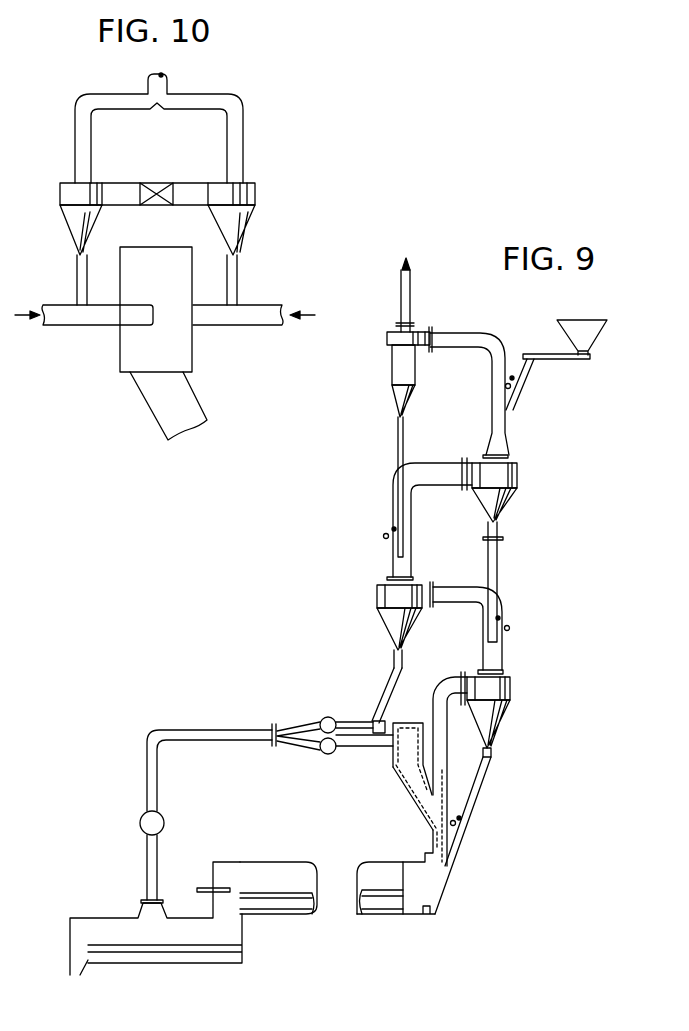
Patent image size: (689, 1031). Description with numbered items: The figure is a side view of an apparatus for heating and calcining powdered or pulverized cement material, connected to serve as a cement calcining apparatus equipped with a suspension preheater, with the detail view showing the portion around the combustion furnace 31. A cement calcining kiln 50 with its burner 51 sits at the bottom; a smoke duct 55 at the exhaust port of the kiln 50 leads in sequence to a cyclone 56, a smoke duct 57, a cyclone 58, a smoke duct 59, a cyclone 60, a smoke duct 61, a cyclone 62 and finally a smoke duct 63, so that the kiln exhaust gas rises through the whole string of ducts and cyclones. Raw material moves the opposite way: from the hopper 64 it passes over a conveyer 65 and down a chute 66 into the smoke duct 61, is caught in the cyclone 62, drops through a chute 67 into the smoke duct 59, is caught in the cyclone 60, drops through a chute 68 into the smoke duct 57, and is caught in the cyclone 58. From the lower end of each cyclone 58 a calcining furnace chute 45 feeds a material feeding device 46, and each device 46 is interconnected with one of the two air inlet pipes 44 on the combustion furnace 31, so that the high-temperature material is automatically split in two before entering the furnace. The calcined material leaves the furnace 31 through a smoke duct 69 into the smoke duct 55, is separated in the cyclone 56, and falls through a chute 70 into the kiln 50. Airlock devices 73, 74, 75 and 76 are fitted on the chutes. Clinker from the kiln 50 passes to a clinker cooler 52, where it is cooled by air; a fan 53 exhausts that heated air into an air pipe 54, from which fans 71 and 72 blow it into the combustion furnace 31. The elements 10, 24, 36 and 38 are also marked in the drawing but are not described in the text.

In FIG. 9, the conveying conduit 10 is at (458, 584).
In FIG. 9, the discharge conduit 24 is at (483, 783).
In FIG. 10, the combustion furnace 31 is at (120, 362).
In FIG. 9, the combustion furnace 31 is at (393, 758).
In FIG. 9, the inclined wall 36 is at (412, 760).
In FIG. 9, the gas supply pipe 38 is at (350, 722).
In FIG. 10, the air inlet pipe 44 is at (86, 326).
In FIG. 9, the air inlet pipe 44 is at (342, 753).
In FIG. 10, the calcining furnace chute 45 is at (77, 281).
In FIG. 9, the calcining furnace chute 45 is at (392, 658).
In FIG. 9, the material feeding device 46 is at (377, 722).
In FIG. 9, the cement calcining kiln 50 is at (296, 910).
In FIG. 9, the burner 51 is at (202, 887).
In FIG. 9, the clinker cooler 52 is at (100, 923).
In FIG. 9, the fan 53 is at (141, 823).
In FIG. 9, the air pipe 54 is at (180, 730).
In FIG. 9, the smoke duct 55 is at (442, 690).
In FIG. 9, the cyclone 56 is at (503, 718).
In FIG. 10, the smoke duct 57 is at (156, 186).
In FIG. 9, the smoke duct 57 is at (455, 604).
In FIG. 10, the cyclone 58 is at (62, 225).
In FIG. 9, the cyclone 58 is at (382, 627).
In FIG. 10, the smoke duct 59 is at (194, 95).
In FIG. 9, the smoke duct 59 is at (440, 464).
In FIG. 9, the cyclone 60 is at (518, 469).
In FIG. 9, the smoke duct 61 is at (463, 337).
In FIG. 9, the cyclone 62 is at (391, 370).
In FIG. 9, the smoke duct 63 is at (400, 297).
In FIG. 9, the hopper 64 is at (587, 335).
In FIG. 9, the conveyer 65 is at (575, 360).
In FIG. 9, the chute 66 is at (507, 406).
In FIG. 9, the chute 67 is at (397, 456).
In FIG. 9, the chute 68 is at (499, 554).
In FIG. 9, the smoke duct 69 is at (418, 807).
In FIG. 9, the chute 70 is at (471, 807).
In FIG. 9, the fan 71 is at (321, 719).
In FIG. 9, the fan 72 is at (327, 754).
In FIG. 9, the airlock device 73 is at (463, 825).
In FIG. 9, the airlock device 74 is at (509, 628).
In FIG. 9, the airlock device 75 is at (388, 528).
In FIG. 9, the airlock device 76 is at (523, 383).